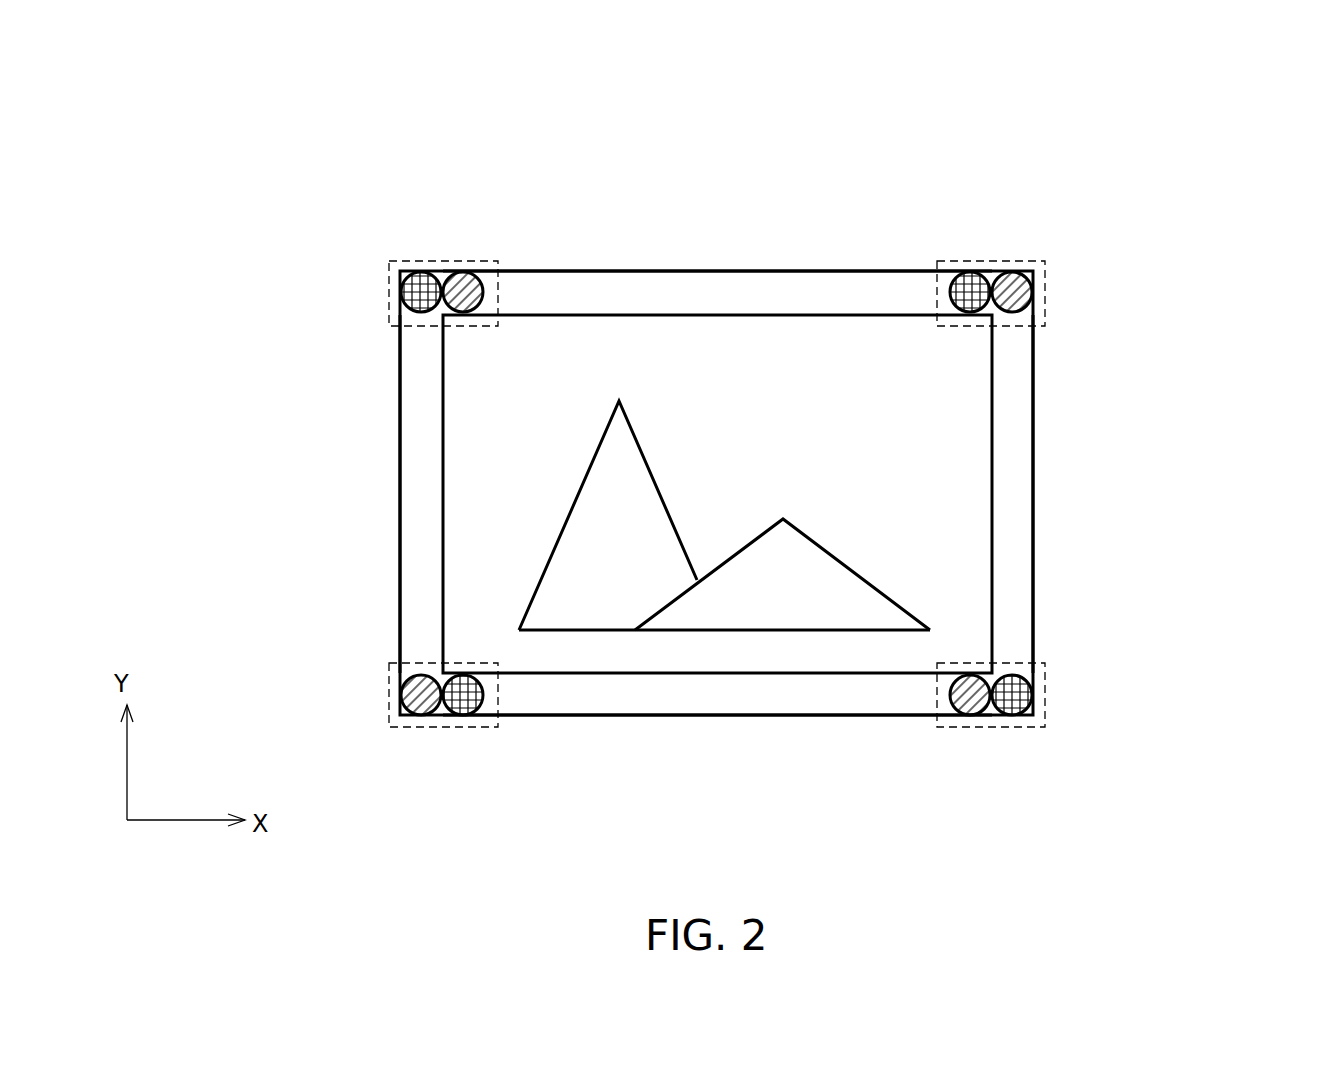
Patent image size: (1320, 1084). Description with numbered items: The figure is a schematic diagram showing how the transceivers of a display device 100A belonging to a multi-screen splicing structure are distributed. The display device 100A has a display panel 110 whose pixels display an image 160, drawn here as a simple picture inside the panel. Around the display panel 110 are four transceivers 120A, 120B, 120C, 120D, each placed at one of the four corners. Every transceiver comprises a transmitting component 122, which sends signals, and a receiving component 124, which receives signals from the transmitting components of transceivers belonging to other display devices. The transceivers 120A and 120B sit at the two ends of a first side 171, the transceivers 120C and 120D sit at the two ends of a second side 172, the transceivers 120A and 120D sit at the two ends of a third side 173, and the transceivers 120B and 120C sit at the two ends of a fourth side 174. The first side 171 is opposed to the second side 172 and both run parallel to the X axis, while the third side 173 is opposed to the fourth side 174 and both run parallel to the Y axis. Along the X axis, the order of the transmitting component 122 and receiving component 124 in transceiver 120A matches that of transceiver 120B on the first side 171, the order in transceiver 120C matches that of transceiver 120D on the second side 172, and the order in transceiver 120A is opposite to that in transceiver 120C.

The display device 100A is at (1114, 106).
The display panel 110 is at (957, 413).
The transceiver 120A is at (389, 287).
The transceiver 120B is at (1047, 287).
The transceiver 120C is at (1047, 698).
The transceiver 120D is at (389, 698).
The transmitting component 122 is at (468, 283).
The receiving component 124 is at (420, 284).
The image 160 is at (580, 485).
The first side 171 is at (716, 285).
The second side 172 is at (717, 702).
The third side 173 is at (408, 482).
The fourth side 174 is at (1027, 483).